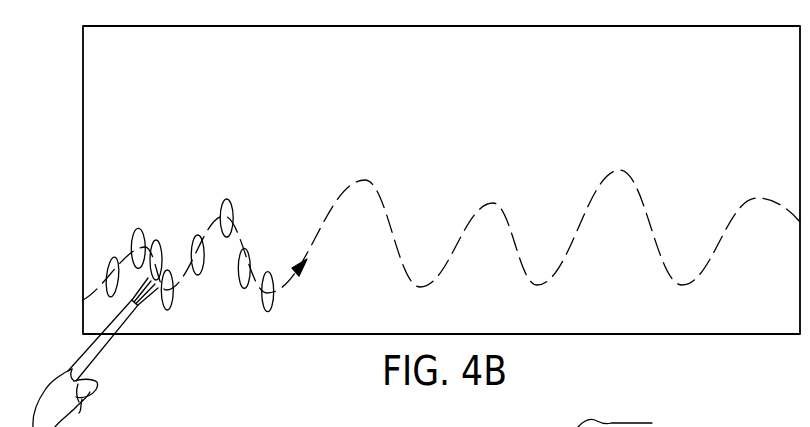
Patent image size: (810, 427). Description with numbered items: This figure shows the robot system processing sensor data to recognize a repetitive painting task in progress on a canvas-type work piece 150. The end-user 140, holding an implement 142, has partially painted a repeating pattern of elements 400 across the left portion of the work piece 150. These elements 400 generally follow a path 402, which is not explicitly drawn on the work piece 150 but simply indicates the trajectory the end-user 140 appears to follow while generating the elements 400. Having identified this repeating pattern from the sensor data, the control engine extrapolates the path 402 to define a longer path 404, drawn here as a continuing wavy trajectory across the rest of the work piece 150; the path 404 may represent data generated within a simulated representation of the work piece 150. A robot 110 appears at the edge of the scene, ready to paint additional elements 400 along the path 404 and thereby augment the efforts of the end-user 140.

The work piece 150 is at (750, 87).
The elements 400 is at (227, 198).
The path 402 is at (284, 285).
The path 404 is at (362, 182).
The end-user 140 is at (43, 398).
The implement 142 is at (97, 364).
The robot 110 is at (627, 420).